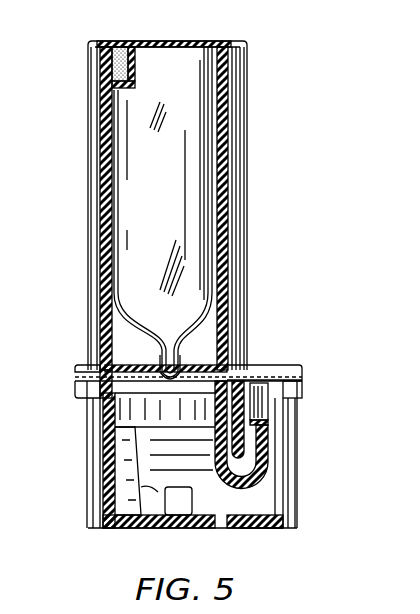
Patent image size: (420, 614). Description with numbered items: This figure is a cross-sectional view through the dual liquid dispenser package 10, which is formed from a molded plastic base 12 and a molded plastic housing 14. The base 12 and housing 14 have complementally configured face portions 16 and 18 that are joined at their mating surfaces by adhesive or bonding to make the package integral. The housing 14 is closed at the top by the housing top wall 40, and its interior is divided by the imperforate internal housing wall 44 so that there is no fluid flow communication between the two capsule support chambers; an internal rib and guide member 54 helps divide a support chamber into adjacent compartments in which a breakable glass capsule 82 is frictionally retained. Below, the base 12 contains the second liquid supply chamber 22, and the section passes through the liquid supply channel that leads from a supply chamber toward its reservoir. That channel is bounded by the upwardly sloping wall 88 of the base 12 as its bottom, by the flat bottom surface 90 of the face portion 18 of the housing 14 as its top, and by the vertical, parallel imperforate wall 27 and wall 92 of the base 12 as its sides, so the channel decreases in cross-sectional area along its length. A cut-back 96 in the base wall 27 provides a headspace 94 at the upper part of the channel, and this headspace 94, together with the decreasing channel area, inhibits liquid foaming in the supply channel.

The dual liquid dispenser package 10 is at (262, 243).
The base 12 is at (80, 452).
The housing 14 is at (80, 250).
The face portion 16 is at (302, 378).
The face portion 18 is at (300, 372).
The second liquid supply chamber 22 is at (145, 490).
The imperforate wall 27 is at (275, 437).
The housing top wall 40 is at (187, 43).
The internal housing wall 44 is at (200, 325).
The internal rib and guide member 54 is at (133, 57).
The capsule 82 is at (205, 104).
The wall 88 is at (262, 525).
The bottom surface 90 is at (265, 363).
The wall 92 is at (270, 462).
The headspace 94 is at (265, 408).
The cut-back 96 is at (262, 420).